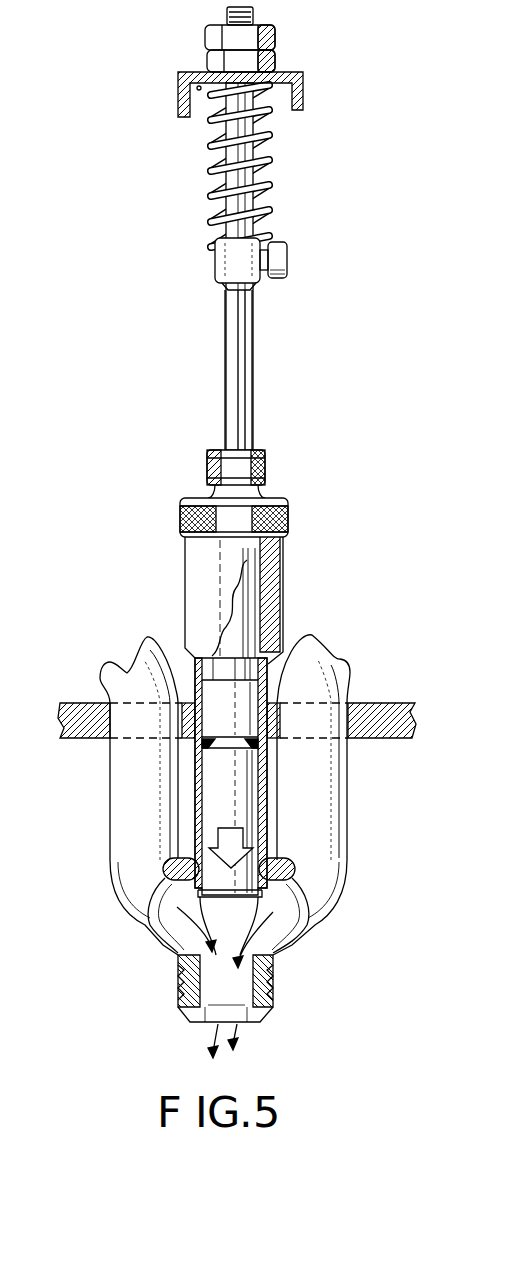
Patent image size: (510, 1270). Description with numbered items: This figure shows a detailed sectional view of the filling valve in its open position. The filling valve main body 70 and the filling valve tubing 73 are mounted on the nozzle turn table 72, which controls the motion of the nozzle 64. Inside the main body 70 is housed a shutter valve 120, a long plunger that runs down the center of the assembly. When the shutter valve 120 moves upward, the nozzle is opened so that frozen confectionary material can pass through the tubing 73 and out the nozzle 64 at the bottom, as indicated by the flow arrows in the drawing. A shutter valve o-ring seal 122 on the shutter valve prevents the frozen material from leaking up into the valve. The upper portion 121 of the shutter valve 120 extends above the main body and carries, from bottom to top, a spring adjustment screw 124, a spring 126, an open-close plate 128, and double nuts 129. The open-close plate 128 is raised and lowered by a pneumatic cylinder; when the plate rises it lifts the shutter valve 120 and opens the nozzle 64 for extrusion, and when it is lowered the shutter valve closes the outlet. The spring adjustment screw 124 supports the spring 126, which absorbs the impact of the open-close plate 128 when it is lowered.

The double nuts 129 is at (280, 36).
The open-close plate 128 is at (303, 95).
The spring 126 is at (268, 148).
The spring adjustment screw 124 is at (287, 254).
The upper portion of the shutter valve 121 is at (244, 363).
The nozzle turn table 72 is at (386, 722).
The shutter valve o-ring seal 122 is at (267, 745).
The filling valve main body 70 is at (258, 795).
The shutter valve 120 is at (253, 815).
The filling valve tubing 73 is at (318, 872).
The nozzle 64 is at (275, 993).